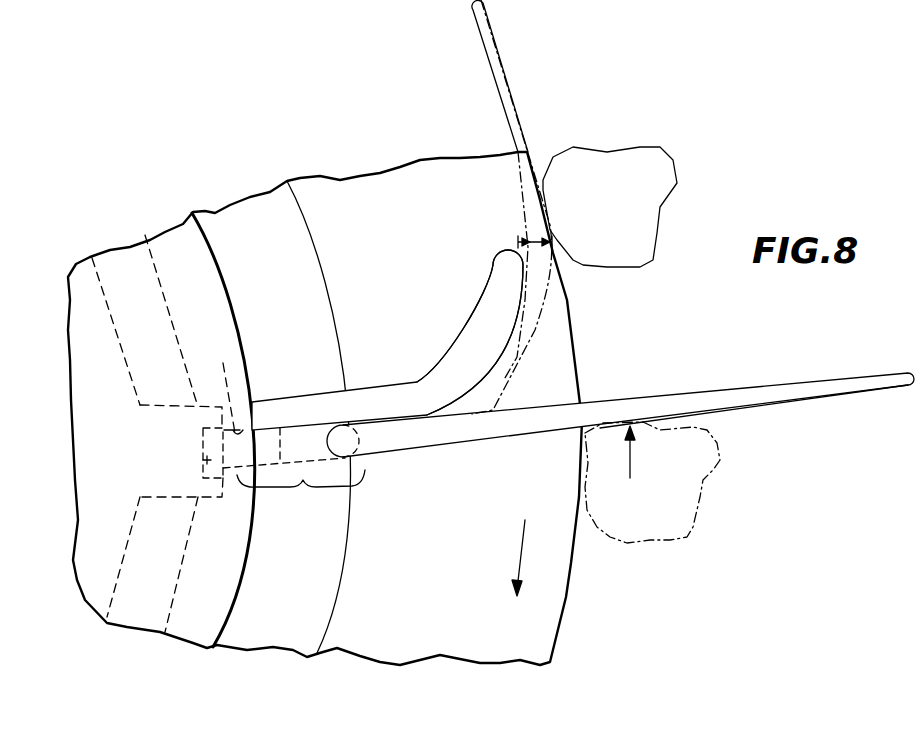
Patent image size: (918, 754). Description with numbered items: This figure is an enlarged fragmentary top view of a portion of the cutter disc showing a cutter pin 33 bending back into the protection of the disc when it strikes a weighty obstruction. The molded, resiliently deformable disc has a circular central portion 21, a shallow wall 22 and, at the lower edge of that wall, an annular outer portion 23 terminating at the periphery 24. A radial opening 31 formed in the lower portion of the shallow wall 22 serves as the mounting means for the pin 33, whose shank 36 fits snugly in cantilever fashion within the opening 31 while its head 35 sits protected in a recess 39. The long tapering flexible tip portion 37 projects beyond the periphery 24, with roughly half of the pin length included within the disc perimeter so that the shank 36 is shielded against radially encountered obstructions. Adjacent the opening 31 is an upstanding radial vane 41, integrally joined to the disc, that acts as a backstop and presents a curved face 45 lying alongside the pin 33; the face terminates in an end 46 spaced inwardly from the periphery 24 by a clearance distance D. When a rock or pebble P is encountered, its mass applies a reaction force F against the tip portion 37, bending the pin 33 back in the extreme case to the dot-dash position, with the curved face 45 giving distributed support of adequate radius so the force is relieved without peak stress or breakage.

The circular central portion 21 is at (164, 574).
The shallow wall 22 is at (300, 576).
The annular outer portion 23 is at (428, 582).
The periphery 24 is at (567, 598).
The radial opening 31 is at (225, 396).
The cutter pin 33 is at (537, 124).
The head 35 is at (203, 461).
The shank 36 is at (294, 474).
The tapering flexible tip portion 37 is at (732, 405).
The recess 39 is at (175, 408).
The radial vane 41 is at (390, 386).
The curved face 45 is at (507, 353).
The end 46 is at (514, 242).
The clearance distance D is at (547, 243).
The force F is at (640, 452).
The rock or pebble P is at (643, 263).